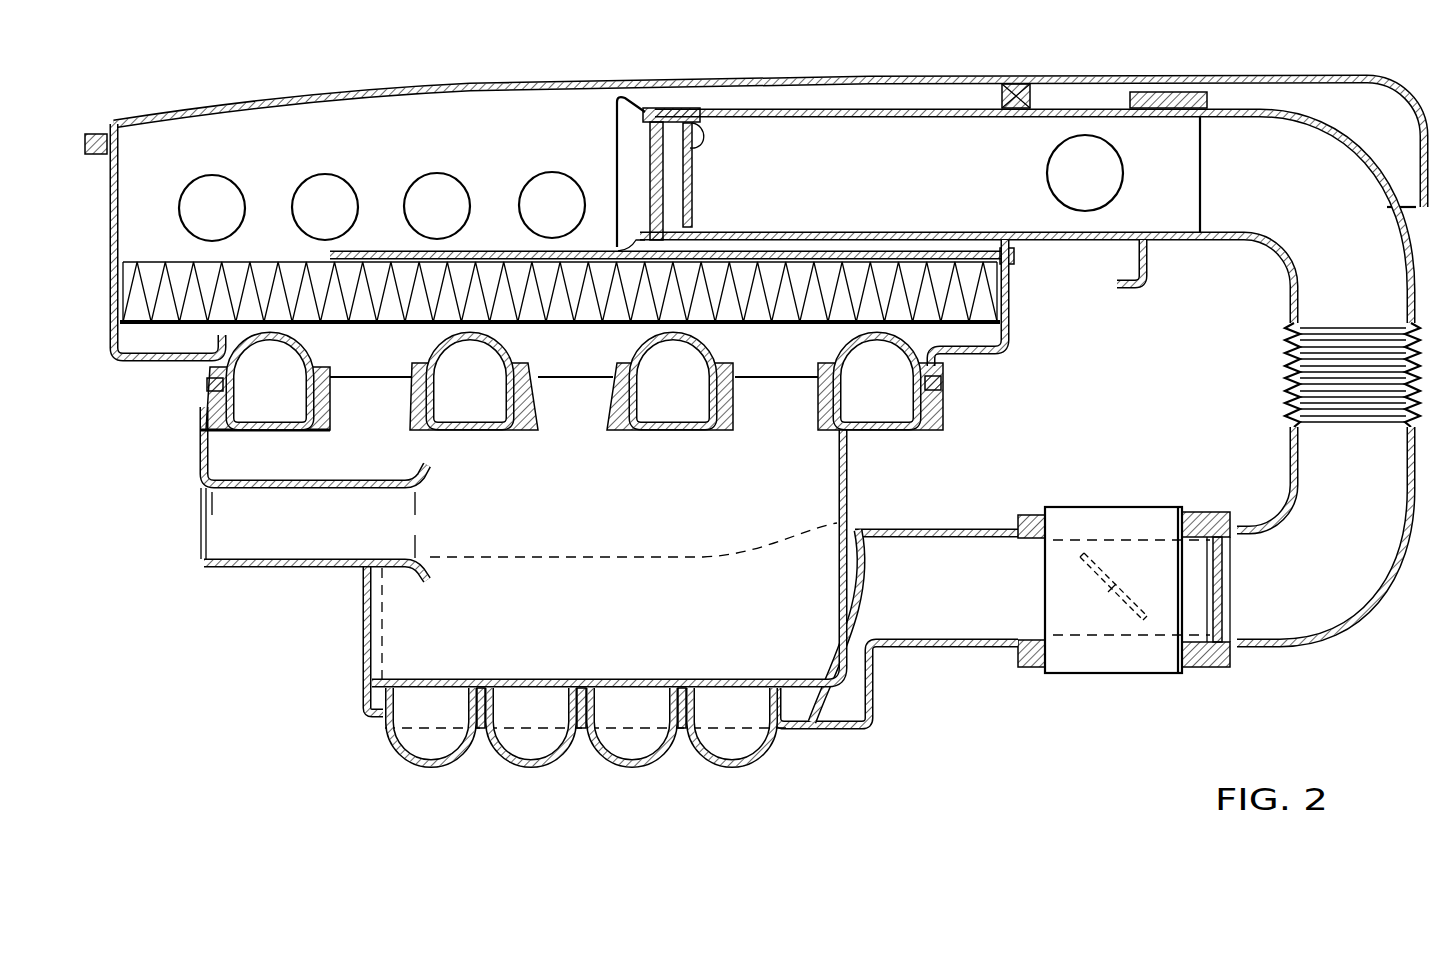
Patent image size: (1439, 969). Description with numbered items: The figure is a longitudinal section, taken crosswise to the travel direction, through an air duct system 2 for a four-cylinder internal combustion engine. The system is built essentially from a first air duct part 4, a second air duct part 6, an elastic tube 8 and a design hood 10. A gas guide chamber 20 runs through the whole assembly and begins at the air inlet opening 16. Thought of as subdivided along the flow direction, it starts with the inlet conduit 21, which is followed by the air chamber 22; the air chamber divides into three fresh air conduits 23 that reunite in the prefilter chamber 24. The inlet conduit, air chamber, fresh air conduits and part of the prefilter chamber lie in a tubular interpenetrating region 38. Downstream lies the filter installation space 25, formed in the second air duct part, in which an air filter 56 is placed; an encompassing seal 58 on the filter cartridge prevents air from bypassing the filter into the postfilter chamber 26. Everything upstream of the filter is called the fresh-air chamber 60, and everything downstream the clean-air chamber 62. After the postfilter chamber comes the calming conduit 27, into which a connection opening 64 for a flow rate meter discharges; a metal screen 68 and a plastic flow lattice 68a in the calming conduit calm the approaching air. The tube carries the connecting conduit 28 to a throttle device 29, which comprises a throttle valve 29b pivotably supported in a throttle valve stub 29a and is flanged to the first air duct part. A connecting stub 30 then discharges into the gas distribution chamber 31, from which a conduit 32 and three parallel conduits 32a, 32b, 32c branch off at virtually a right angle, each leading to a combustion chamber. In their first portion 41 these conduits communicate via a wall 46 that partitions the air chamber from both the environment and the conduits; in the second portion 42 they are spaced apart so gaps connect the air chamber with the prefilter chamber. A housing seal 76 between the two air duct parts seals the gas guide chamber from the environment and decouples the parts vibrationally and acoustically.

The air duct system 2 is at (858, 750).
The first air duct part 4 is at (355, 655).
The second air duct part 6 is at (152, 363).
The tube 8 is at (1293, 642).
The design hood 10 is at (593, 68).
The air inlet opening 16 is at (207, 498).
The gas guide chamber 20 is at (353, 537).
The inlet conduit 21 is at (260, 537).
The air chamber 22 is at (597, 615).
The fresh air conduits 23 is at (370, 405).
The prefilter chamber 24 is at (792, 360).
The filter installation space 25 is at (990, 300).
The postfilter chamber 26 is at (390, 150).
The calming conduit 27 is at (823, 147).
The connecting conduit 28 is at (1310, 253).
The throttle device 29 is at (1110, 666).
The throttle valve stub 29a is at (1157, 520).
The throttle valve 29b is at (1099, 557).
The connecting stub 30 is at (943, 613).
The gas distribution chamber 31 is at (858, 703).
The conduit 32 is at (891, 392).
The conduit 32a is at (693, 392).
The conduit 32b is at (490, 392).
The conduit 32c is at (290, 392).
The interpenetrating region 38 is at (860, 512).
The first portion 41 is at (380, 733).
The second portion 42 is at (795, 428).
The wall 46 is at (742, 678).
The air filter 56 is at (150, 278).
The seal 58 is at (1015, 260).
The fresh-air chamber 60 is at (355, 605).
The clean-air chamber 62 is at (502, 118).
The connection opening 64 is at (1082, 153).
The metal screen 68 is at (714, 110).
The flow lattice 68a is at (647, 97).
The housing seal 76 is at (207, 390).